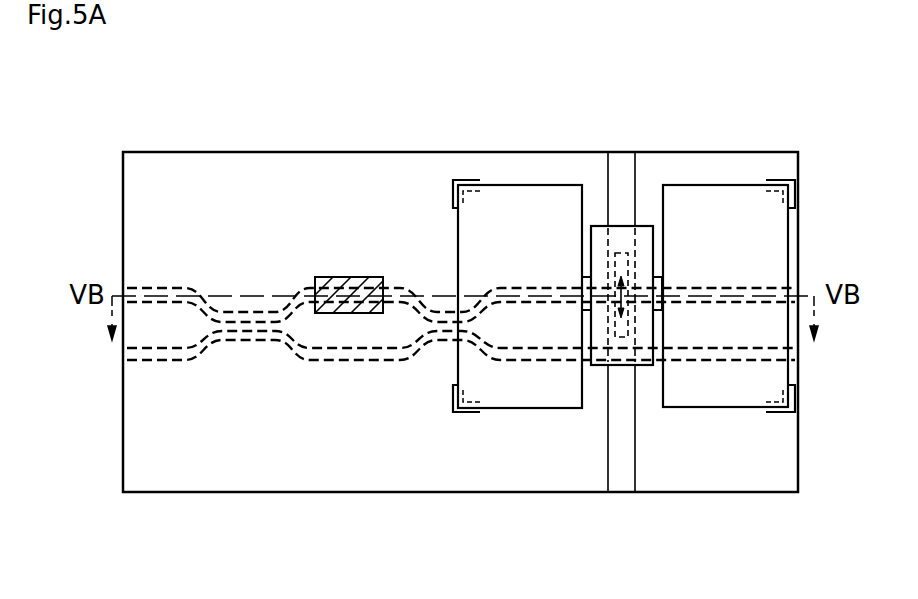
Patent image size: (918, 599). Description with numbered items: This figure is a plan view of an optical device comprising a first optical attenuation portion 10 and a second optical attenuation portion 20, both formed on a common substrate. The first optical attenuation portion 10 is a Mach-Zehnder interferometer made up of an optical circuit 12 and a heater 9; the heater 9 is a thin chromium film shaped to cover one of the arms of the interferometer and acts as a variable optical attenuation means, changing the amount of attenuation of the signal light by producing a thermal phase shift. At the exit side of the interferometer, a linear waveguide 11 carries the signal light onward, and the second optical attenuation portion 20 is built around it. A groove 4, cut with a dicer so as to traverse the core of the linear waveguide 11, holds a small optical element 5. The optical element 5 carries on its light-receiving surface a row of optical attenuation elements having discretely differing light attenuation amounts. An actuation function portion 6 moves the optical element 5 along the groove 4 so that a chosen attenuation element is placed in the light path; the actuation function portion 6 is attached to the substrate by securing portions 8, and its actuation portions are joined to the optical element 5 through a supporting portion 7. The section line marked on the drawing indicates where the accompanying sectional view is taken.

The groove 4 is at (622, 463).
The optical element 5 is at (622, 340).
The actuation function portion 6 is at (503, 228).
The supporting portion 7 is at (607, 227).
The securing portions 8 is at (453, 188).
The heater 9 is at (352, 277).
The first optical attenuation portion 10 is at (127, 533).
The linear waveguide 11 is at (518, 288).
The optical circuit 12 is at (277, 312).
The second optical attenuation portion 20 is at (790, 100).